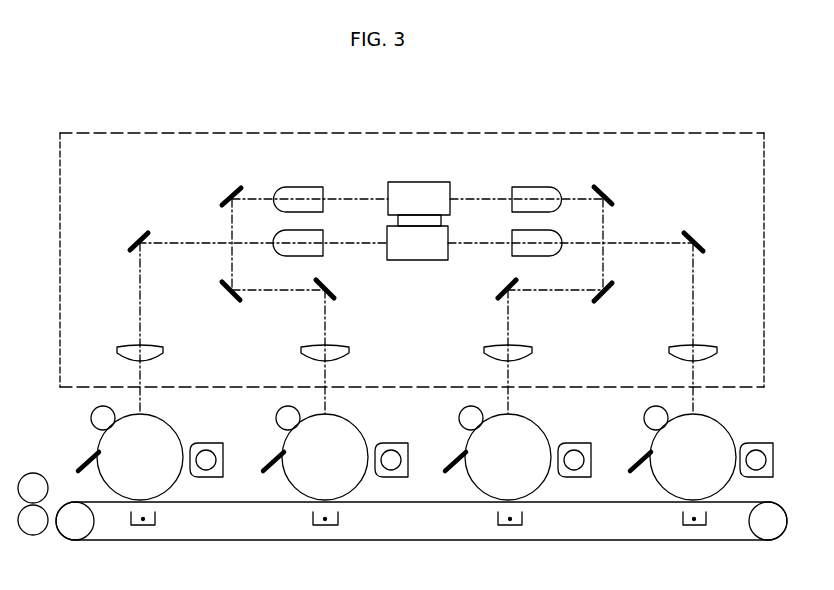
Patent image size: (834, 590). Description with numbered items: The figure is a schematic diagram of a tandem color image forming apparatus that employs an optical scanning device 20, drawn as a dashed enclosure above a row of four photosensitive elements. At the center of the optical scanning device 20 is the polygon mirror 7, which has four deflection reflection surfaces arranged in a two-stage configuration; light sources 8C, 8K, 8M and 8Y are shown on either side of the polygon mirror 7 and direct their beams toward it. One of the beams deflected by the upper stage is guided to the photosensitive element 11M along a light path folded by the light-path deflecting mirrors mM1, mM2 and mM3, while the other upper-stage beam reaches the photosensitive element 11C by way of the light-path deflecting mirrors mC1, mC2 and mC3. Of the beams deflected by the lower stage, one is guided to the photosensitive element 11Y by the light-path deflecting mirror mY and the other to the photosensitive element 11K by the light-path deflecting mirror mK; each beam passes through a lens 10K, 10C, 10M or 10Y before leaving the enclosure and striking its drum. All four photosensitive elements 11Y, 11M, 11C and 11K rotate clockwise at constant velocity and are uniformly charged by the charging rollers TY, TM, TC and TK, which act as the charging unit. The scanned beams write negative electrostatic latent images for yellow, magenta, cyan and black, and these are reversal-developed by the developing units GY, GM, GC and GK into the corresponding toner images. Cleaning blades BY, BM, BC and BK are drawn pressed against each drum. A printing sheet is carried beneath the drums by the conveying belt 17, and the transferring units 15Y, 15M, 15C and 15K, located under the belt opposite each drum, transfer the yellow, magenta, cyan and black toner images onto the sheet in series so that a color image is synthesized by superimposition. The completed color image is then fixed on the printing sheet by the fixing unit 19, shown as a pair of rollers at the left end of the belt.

The optical scanning device 20 is at (772, 148).
The polygon mirror 7 is at (432, 182).
The cyan light source 8C is at (296, 187).
The black light source 8K is at (279, 240).
The magenta light source 8M is at (540, 187).
The yellow light source 8Y is at (512, 240).
The light-path deflecting mirror mK is at (136, 234).
The light-path deflecting mirror mC1 is at (228, 190).
The light-path deflecting mirror mC2 is at (226, 296).
The light-path deflecting mirror mC3 is at (332, 290).
The light-path deflecting mirror mM1 is at (602, 190).
The light-path deflecting mirror mM2 is at (608, 298).
The light-path deflecting mirror mM3 is at (502, 290).
The light-path deflecting mirror mY is at (690, 236).
The black lens 10K is at (128, 345).
The cyan lens 10C is at (313, 345).
The magenta lens 10M is at (497, 345).
The yellow lens 10Y is at (700, 345).
The photosensitive element 11K is at (170, 410).
The photosensitive element 11C is at (355, 410).
The photosensitive element 11M is at (538, 410).
The photosensitive element 11Y is at (724, 410).
The charging roller TK is at (92, 412).
The charging roller TC is at (277, 412).
The charging roller TM is at (460, 412).
The charging roller TY is at (645, 412).
The black cleaning blade BK is at (78, 465).
The cyan cleaning blade BC is at (263, 465).
The magenta cleaning blade BM is at (445, 465).
The yellow cleaning blade BY is at (630, 465).
The developing unit GK is at (206, 443).
The developing unit GC is at (390, 443).
The developing unit GM is at (575, 443).
The developing unit GY is at (758, 443).
The transferring unit 15K is at (157, 517).
The transferring unit 15C is at (340, 517).
The transferring unit 15M is at (496, 517).
The transferring unit 15Y is at (681, 517).
The conveying belt 17 is at (548, 542).
The fixing unit 19 is at (30, 473).